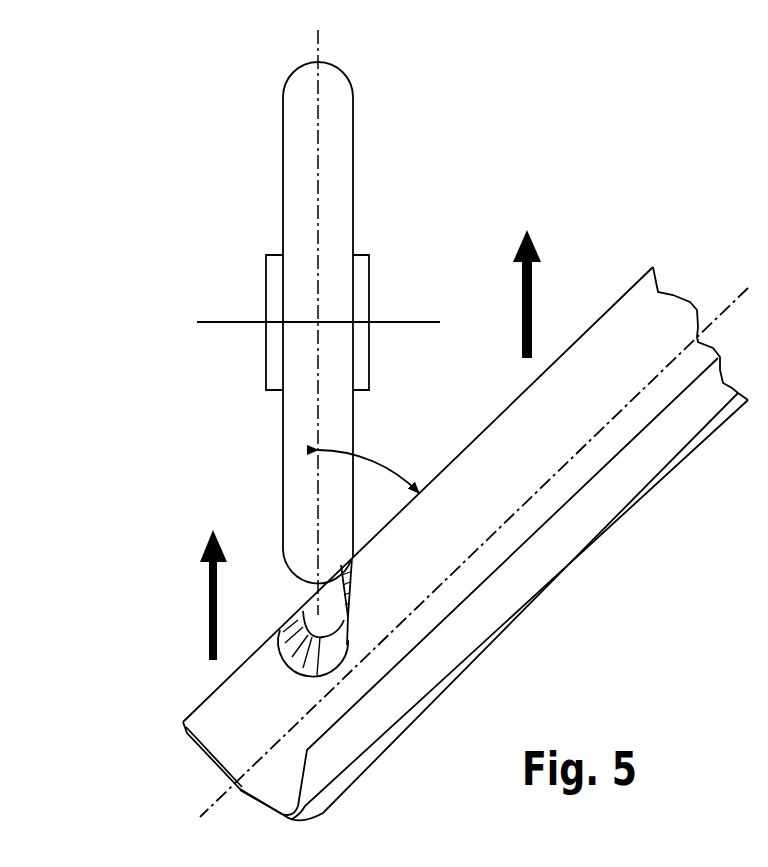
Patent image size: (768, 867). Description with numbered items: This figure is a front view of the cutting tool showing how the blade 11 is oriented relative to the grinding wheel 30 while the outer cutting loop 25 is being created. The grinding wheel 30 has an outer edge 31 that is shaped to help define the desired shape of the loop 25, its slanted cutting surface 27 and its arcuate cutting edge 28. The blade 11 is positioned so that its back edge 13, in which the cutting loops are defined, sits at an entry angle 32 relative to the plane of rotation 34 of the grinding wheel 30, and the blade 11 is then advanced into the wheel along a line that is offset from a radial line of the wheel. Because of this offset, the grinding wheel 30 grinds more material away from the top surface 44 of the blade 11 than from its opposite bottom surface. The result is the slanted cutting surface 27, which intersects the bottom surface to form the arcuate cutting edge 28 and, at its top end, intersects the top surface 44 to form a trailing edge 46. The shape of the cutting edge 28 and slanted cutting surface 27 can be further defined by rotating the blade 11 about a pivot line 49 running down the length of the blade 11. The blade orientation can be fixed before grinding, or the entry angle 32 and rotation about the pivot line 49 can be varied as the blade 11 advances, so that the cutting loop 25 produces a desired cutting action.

The blade 11 is at (407, 522).
The back edge 13 is at (490, 424).
The outer cutting loop 25 is at (290, 592).
The slanted cutting surface 27 is at (335, 657).
The arcuate cutting edge 28 is at (325, 624).
The grinding wheel 30 is at (318, 313).
The outer edge 31 is at (298, 67).
The entry angle 32 is at (380, 464).
The plane of rotation 34 is at (317, 211).
The top surface 44 is at (243, 730).
The trailing edge 46 is at (295, 673).
The pivot line 49 is at (733, 301).